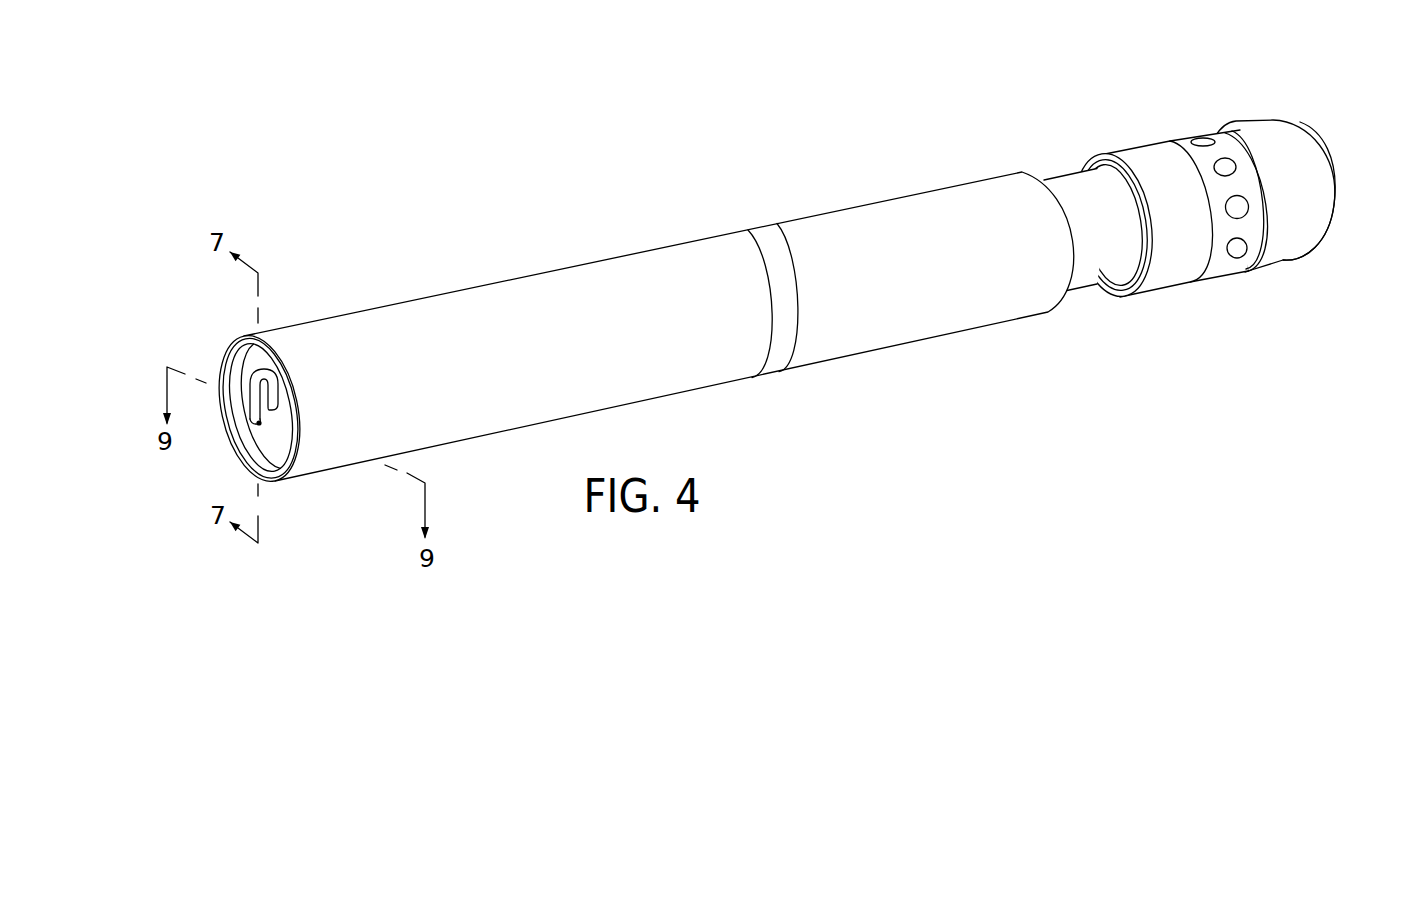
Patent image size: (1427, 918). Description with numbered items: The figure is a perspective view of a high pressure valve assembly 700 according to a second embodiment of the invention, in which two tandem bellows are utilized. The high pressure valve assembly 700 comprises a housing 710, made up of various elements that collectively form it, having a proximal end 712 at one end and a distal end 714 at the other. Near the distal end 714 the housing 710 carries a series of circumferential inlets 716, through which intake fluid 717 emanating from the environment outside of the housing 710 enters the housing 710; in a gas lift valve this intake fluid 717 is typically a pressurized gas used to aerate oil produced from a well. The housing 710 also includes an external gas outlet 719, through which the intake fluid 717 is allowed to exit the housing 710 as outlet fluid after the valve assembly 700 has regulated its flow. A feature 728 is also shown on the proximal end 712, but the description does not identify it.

The high pressure valve assembly 700 is at (790, 298).
The housing 710 is at (497, 316).
The proximal end 712 is at (313, 479).
The distal end 714 is at (1312, 156).
The circumferential inlets 716 is at (1197, 141).
The intake fluid 717 is at (1164, 135).
The external gas outlet 719 is at (1333, 176).
The keyhole slot 728 is at (250, 386).